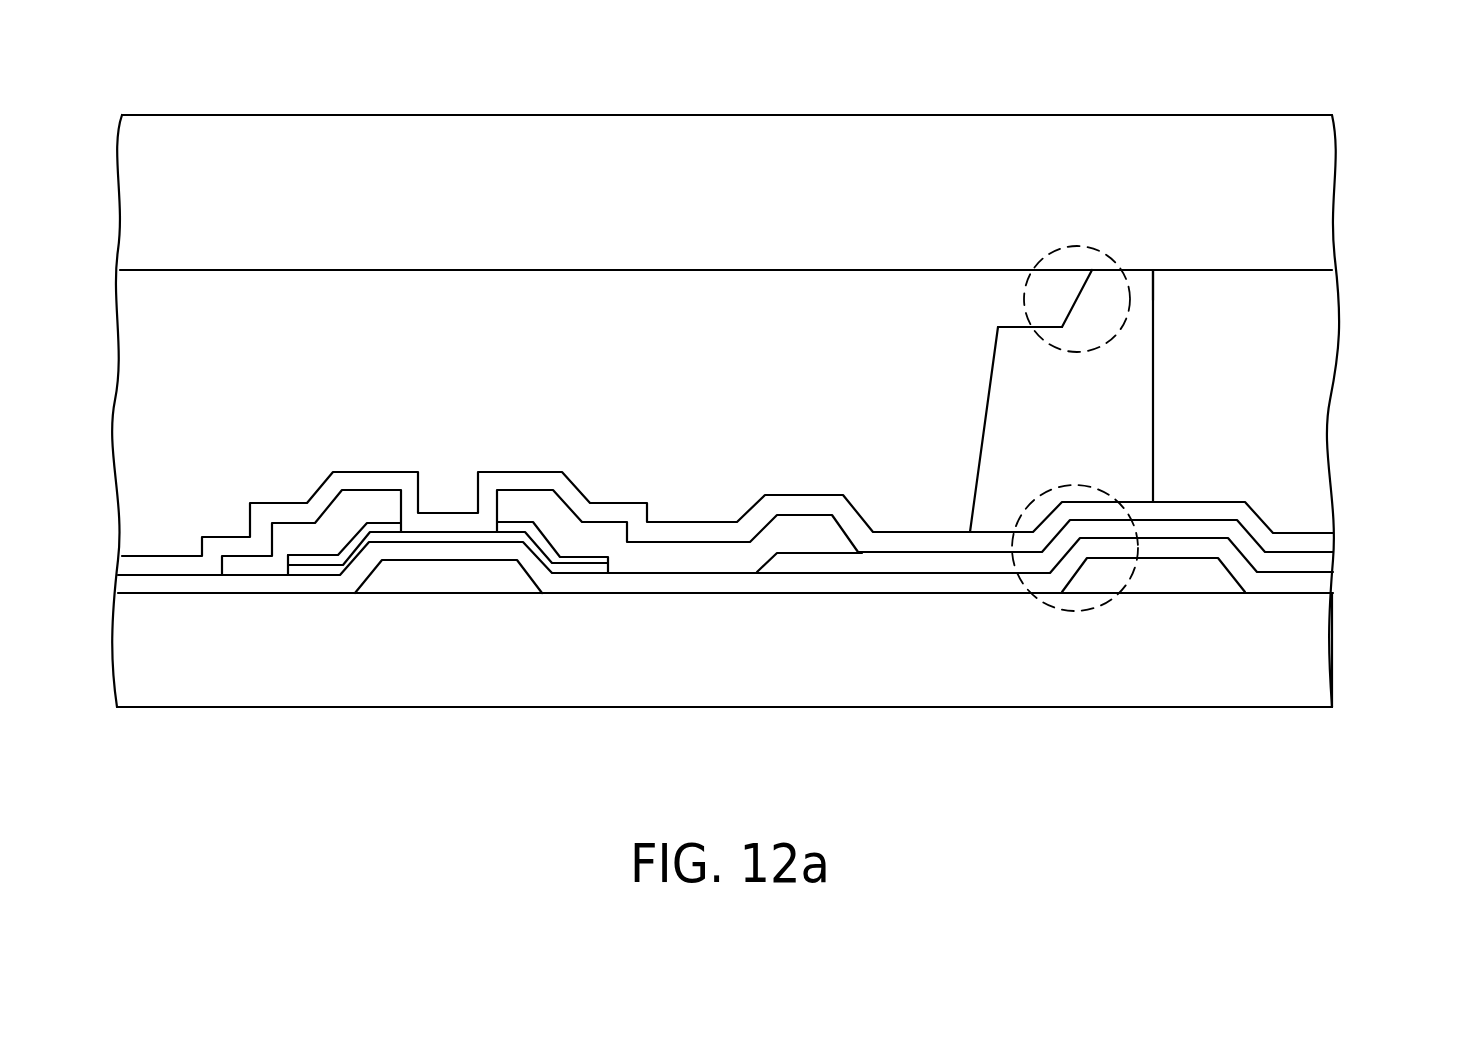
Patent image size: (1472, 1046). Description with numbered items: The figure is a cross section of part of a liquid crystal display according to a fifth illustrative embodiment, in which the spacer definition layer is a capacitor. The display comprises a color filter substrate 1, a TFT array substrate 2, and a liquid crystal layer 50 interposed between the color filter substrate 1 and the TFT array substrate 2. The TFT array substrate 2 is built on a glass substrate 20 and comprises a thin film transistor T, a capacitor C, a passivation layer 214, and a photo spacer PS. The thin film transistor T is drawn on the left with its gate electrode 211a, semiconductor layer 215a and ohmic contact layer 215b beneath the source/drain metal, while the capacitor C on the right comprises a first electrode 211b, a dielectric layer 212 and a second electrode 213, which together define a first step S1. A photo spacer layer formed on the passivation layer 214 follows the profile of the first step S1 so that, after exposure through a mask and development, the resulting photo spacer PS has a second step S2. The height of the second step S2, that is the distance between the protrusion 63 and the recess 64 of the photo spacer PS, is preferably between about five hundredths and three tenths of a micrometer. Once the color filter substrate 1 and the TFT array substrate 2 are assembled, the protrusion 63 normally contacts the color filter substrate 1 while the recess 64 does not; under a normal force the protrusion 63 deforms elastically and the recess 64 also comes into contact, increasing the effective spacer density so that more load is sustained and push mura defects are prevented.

The color filter substrate 1 is at (1418, 115).
The TFT array substrate 2 is at (1418, 500).
The glass substrate 20 is at (1305, 673).
The liquid crystal layer 50 is at (1305, 418).
The protrusion 63 is at (1143, 270).
The recess 64 is at (1013, 327).
The photo spacer PS is at (1100, 372).
The first step S1 is at (1068, 620).
The second step S2 is at (1067, 240).
The thin film transistor T is at (382, 596).
The capacitor C is at (1153, 598).
The gate electrode 211a is at (411, 570).
The first electrode 211b is at (1193, 590).
The dielectric layer 212 is at (193, 583).
The second electrode 213 is at (593, 565).
The passivation layer 214 is at (150, 563).
The semiconductor layer 215a is at (548, 508).
The ohmic contact layer 215b is at (572, 563).